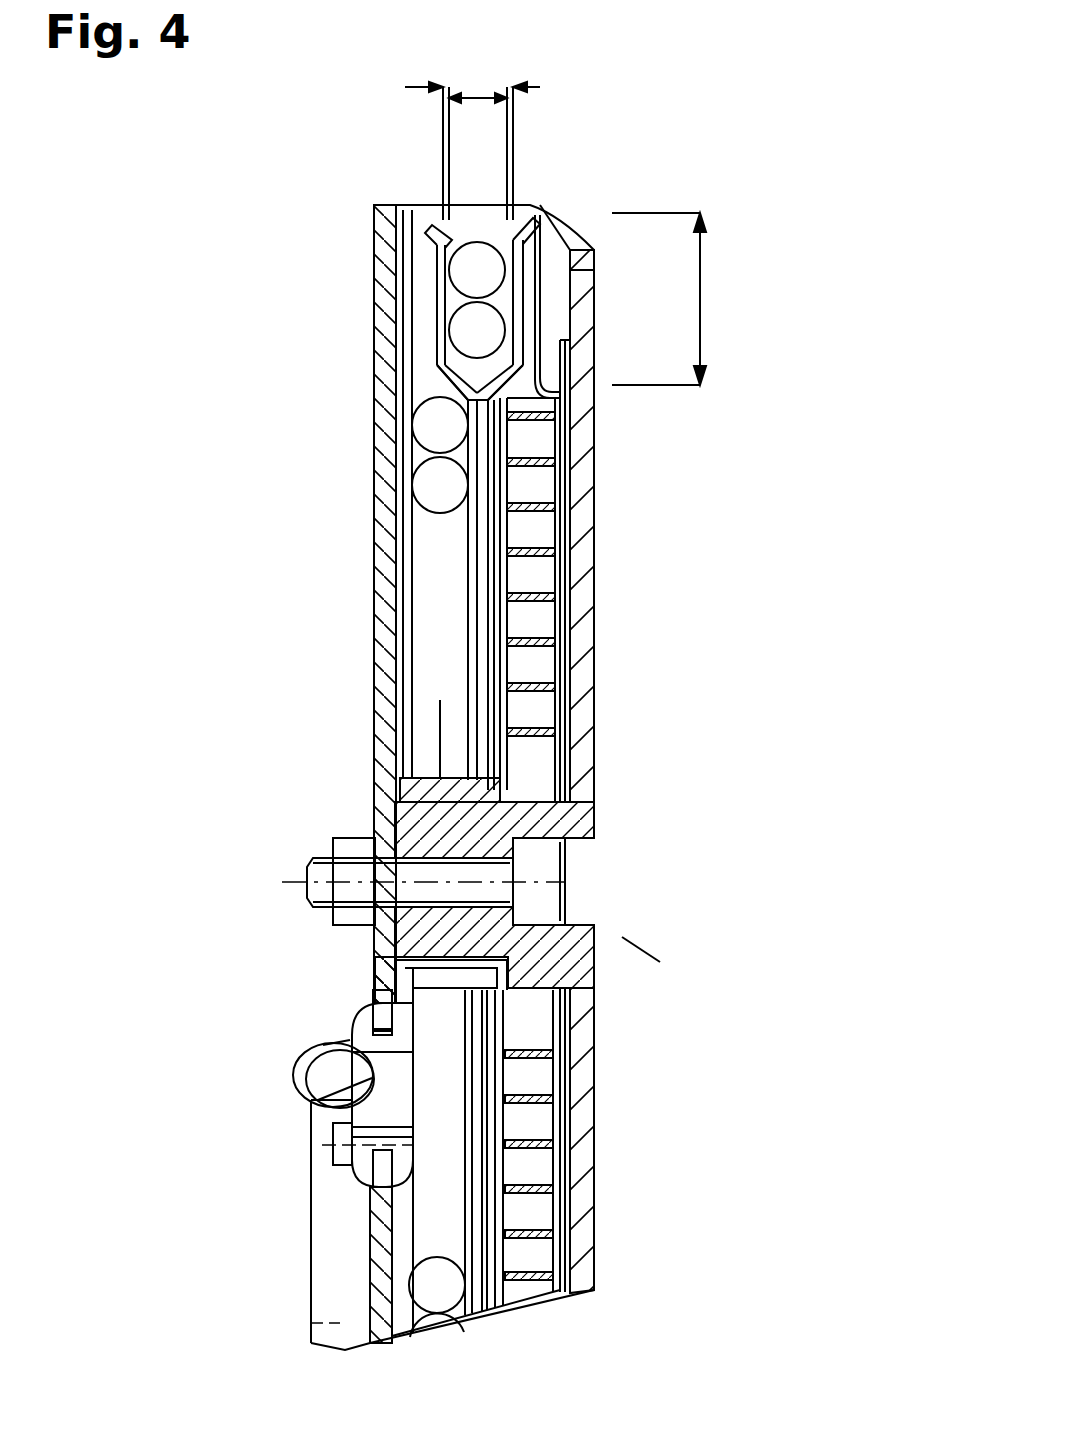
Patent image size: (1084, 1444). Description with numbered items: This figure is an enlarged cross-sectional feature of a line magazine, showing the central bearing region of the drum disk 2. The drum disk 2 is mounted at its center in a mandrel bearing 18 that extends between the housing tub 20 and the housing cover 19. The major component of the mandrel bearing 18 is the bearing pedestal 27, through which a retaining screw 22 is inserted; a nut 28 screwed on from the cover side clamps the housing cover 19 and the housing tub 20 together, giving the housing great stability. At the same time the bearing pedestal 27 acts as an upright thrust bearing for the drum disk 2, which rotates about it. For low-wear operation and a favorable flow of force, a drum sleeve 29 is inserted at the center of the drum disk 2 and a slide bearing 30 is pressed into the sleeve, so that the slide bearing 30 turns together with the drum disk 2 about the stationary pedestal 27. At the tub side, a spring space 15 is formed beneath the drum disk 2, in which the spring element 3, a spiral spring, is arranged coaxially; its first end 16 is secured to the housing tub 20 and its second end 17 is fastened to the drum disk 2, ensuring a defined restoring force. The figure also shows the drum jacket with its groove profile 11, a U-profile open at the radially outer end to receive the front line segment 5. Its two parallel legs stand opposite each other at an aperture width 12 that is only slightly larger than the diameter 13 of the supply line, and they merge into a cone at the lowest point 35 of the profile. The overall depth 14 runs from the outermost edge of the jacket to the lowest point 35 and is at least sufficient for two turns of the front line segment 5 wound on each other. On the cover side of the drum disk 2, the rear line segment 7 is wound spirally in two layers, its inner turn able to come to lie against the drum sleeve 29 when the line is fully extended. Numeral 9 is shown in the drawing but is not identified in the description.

The drum disk 2 is at (430, 590).
The spring element 3 is at (547, 546).
The front line segment 5 is at (475, 300).
The rear line segment 7 is at (340, 1290).
The bearing cage 9 is at (437, 328).
The groove profile 11 is at (437, 235).
The aperture width 12 is at (530, 87).
The diameter 13 is at (478, 97).
The overall depth 14 is at (700, 305).
The spring space 15 is at (540, 620).
The first end 16 is at (545, 420).
The second end 17 is at (594, 790).
The mandrel bearing 18 is at (622, 937).
The housing cover 19 is at (370, 975).
The housing tub 20 is at (583, 1225).
The retaining screw 22 is at (290, 882).
The bearing pedestal 27 is at (594, 835).
The nut 28 is at (343, 912).
The drum sleeve 29 is at (440, 775).
The slide bearing 30 is at (402, 788).
The lowest point 35 is at (478, 368).